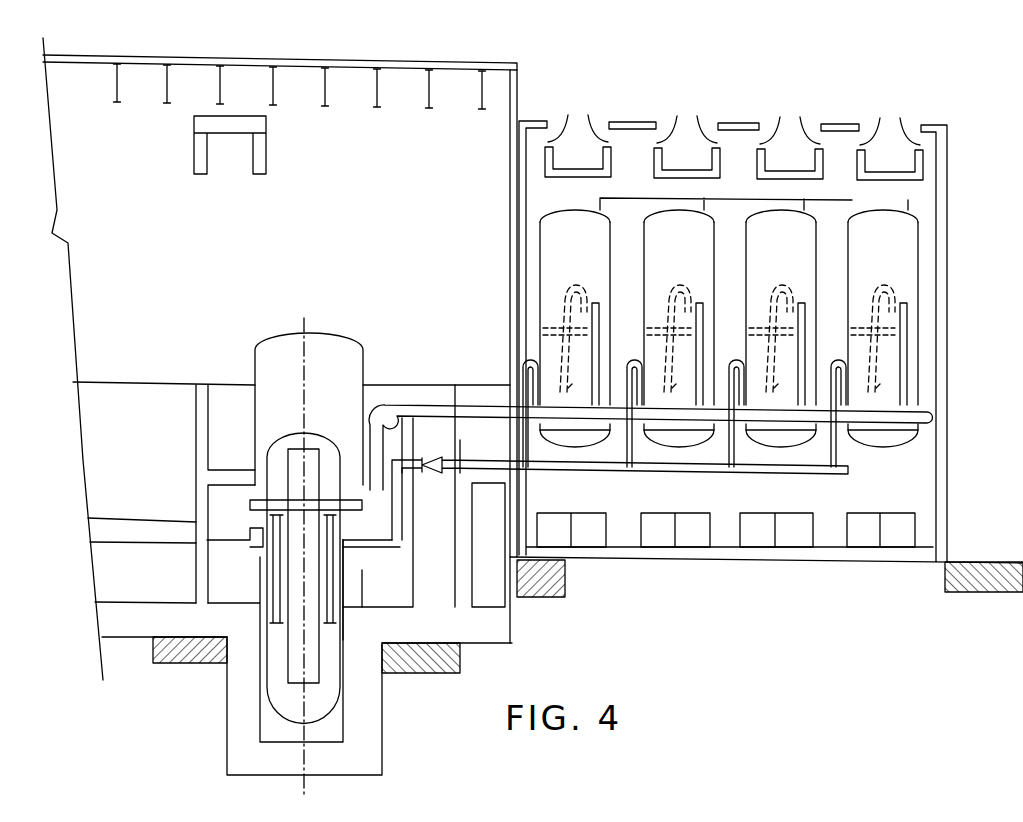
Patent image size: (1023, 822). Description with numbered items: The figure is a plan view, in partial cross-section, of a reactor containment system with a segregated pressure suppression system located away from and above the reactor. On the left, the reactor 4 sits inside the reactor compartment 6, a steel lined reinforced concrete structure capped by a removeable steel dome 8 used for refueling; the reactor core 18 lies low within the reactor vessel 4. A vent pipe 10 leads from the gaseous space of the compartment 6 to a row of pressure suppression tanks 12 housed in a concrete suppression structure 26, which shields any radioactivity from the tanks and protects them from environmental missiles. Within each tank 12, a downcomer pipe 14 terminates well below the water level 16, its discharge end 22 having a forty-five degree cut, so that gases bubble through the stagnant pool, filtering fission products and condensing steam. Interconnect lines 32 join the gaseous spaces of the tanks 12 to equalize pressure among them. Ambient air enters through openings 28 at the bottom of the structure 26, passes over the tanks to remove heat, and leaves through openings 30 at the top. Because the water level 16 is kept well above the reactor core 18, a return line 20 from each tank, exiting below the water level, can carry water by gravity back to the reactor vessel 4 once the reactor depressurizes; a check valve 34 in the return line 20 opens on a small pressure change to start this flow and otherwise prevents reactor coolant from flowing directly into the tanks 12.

The reactor 4 is at (323, 701).
The reactor compartment 6 is at (385, 576).
The removeable steel dome 8 is at (312, 333).
The vent pipe 10 is at (500, 407).
The pressure suppression tank 12 is at (960, 207).
The downcomer pipe 14 is at (884, 287).
The water level 16 is at (870, 325).
The reactor core 18 is at (328, 650).
The return line 20 is at (840, 361).
The discharge end 22 is at (713, 391).
The suppression structure 26 is at (952, 307).
The openings 28 is at (902, 537).
The openings 30 is at (734, 137).
The interconnect line 32 is at (853, 199).
The check valve 34 is at (427, 467).